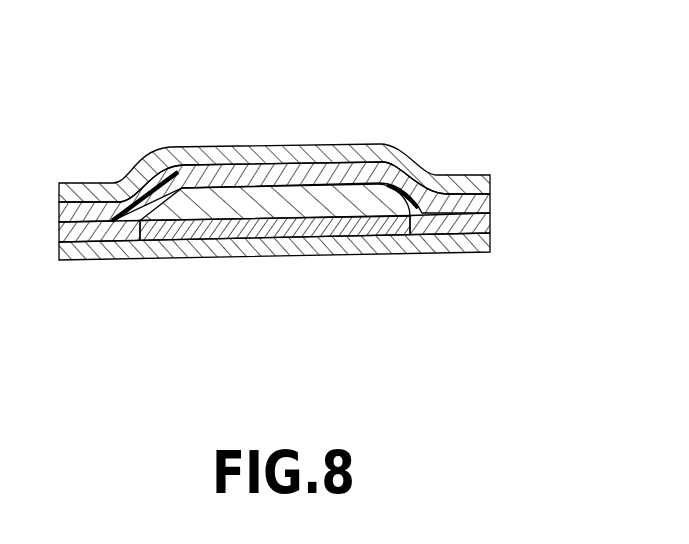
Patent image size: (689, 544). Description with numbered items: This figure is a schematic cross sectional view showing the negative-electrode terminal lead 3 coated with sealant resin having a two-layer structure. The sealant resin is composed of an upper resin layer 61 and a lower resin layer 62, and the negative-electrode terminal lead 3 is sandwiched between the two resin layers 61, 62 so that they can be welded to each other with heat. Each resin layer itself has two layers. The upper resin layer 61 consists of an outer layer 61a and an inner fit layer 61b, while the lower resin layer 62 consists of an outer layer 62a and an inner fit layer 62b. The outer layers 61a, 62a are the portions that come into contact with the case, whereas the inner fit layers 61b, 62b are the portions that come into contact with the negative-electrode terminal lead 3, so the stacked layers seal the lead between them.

The negative-electrode terminal lead 3 is at (237, 203).
The upper resin layer 61 is at (279, 127).
The outer layer 61a is at (369, 152).
The inner fit layer 61b is at (452, 200).
The lower resin layer 62 is at (280, 292).
The outer layer 62a is at (378, 242).
The inner fit layer 62b is at (337, 313).